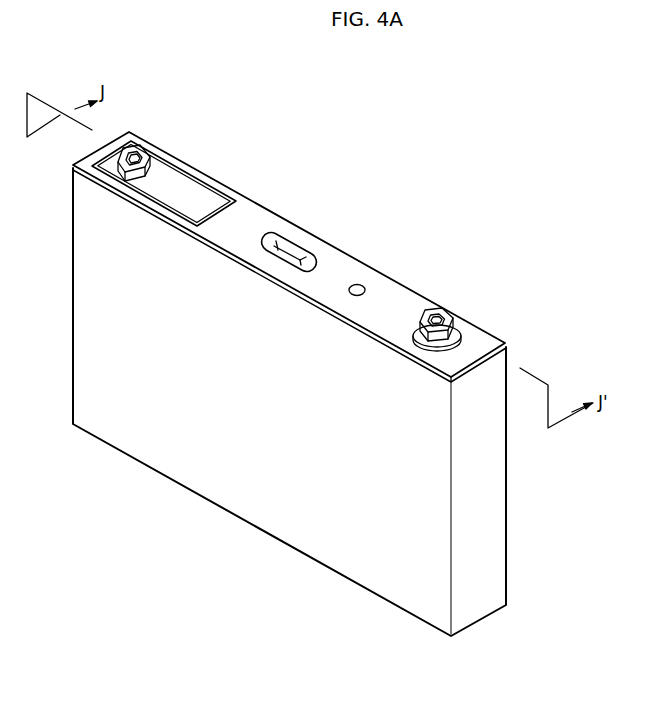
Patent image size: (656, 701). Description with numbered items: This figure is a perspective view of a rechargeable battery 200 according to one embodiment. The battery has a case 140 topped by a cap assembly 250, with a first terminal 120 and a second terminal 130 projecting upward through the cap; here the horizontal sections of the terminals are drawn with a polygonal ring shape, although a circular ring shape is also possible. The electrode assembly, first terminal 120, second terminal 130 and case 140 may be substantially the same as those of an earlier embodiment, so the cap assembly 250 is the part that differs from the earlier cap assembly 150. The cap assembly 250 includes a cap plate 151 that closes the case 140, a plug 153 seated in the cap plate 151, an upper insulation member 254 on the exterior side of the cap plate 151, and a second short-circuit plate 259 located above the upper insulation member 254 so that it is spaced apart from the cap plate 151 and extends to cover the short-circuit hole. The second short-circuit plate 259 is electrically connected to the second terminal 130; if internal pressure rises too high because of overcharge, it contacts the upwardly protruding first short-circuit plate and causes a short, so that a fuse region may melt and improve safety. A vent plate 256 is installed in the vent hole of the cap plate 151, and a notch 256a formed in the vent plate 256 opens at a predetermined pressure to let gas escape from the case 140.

The rechargeable battery 200 is at (508, 127).
The first terminal 120 is at (455, 305).
The second terminal 130 is at (147, 132).
The case 140 is at (247, 508).
The cap assembly 150 is at (348, 253).
The cap plate 151 is at (418, 305).
The plug 153 is at (362, 283).
The cap assembly 250 is at (277, 189).
The upper insulation member 254 is at (225, 188).
The second short-circuit plate 259 is at (188, 185).
The vent plate 256 is at (289, 241).
The notch 256a is at (294, 257).